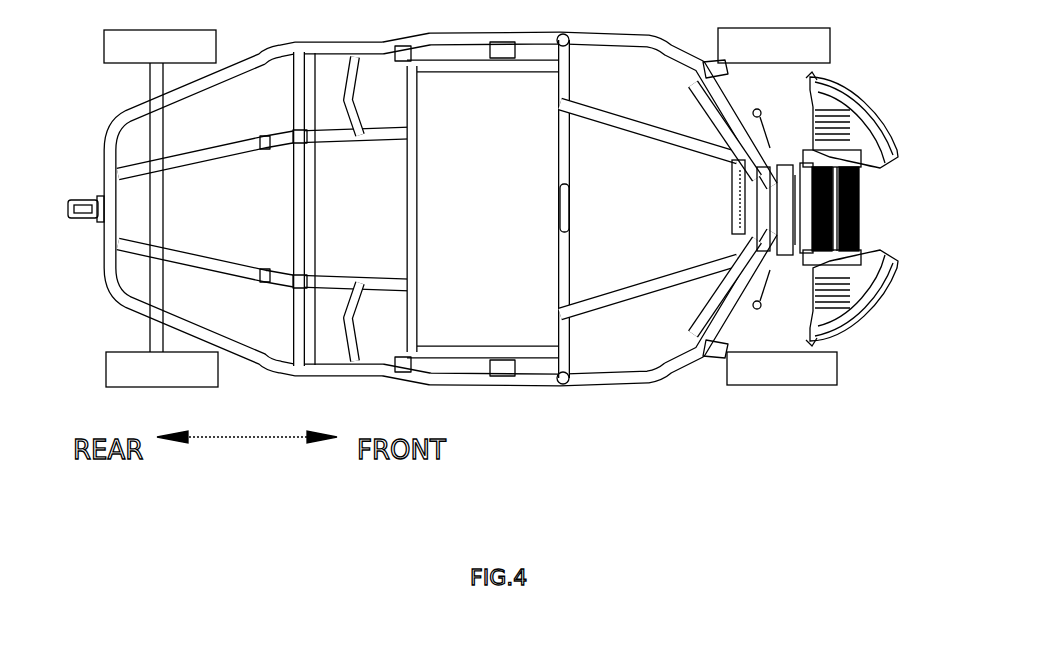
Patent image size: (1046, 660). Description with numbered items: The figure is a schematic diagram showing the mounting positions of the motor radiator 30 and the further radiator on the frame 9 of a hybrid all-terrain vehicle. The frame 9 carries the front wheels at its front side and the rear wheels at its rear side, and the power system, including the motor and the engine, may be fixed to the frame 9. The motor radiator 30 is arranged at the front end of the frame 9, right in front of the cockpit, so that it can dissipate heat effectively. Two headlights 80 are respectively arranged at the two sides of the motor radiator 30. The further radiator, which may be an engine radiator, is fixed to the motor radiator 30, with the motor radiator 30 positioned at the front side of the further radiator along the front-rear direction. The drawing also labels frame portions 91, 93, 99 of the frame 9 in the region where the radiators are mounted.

The vehicle frame 9 is at (500, 373).
The motor 30 is at (863, 227).
The suspension arm 80 is at (873, 313).
The front wheel 91 is at (757, 387).
The rear wheel 93 is at (130, 375).
The rear axle 99 is at (150, 327).